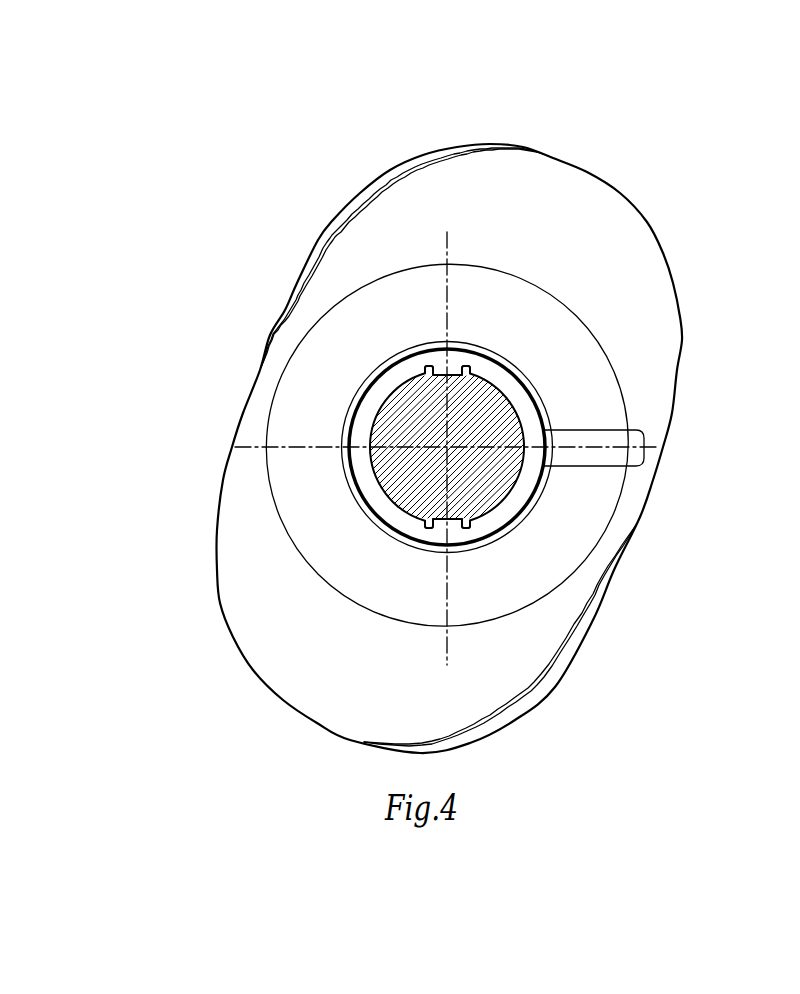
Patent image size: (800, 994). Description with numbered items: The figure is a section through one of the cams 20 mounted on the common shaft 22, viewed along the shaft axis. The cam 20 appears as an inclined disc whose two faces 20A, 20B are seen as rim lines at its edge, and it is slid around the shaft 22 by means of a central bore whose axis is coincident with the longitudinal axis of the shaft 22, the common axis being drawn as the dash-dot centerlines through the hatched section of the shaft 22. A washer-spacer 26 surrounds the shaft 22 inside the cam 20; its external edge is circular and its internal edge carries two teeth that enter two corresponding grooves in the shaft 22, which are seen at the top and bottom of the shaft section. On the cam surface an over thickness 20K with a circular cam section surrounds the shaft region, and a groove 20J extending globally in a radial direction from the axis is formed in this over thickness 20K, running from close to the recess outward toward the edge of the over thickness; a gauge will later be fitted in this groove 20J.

The cam 20 is at (660, 203).
The first face edge of disc 20A is at (423, 150).
The second face edge of disc 20B is at (513, 700).
The over thickness 20K is at (595, 382).
The groove 20J is at (595, 437).
The shaft 22 is at (418, 412).
The washer-spacer 26 is at (368, 400).